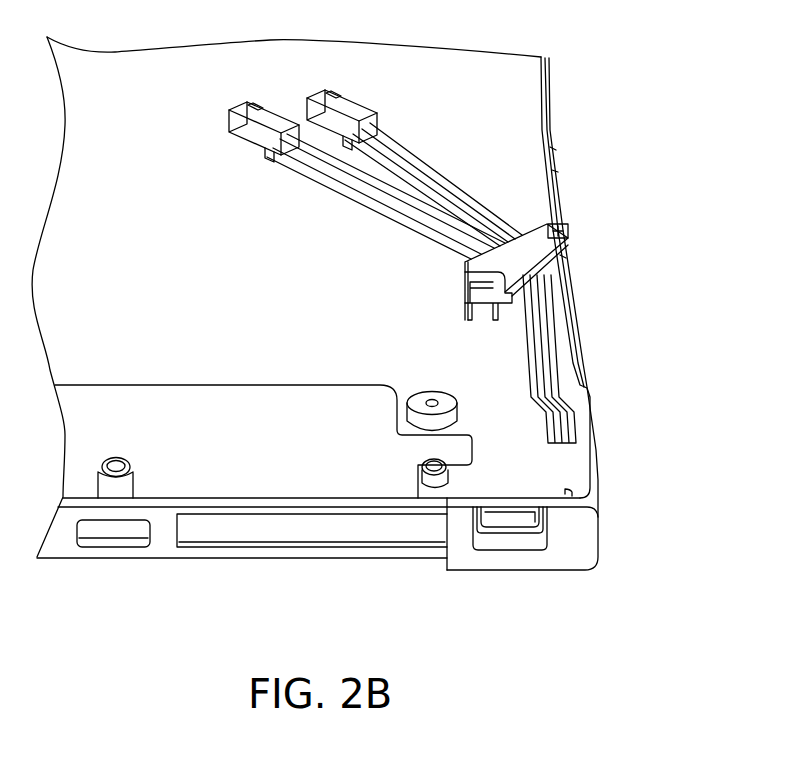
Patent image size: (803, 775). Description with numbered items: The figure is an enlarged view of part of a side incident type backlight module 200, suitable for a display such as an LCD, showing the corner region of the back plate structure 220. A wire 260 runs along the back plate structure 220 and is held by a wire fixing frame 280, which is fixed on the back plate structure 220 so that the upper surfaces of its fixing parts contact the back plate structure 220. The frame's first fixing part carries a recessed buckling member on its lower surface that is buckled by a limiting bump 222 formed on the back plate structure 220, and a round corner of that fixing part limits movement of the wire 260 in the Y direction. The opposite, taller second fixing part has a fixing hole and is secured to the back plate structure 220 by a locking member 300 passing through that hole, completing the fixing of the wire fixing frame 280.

The backlight module 200 is at (588, 618).
The back plate structure 220 is at (513, 473).
The limiting bump 222 is at (493, 288).
The wire 260 is at (403, 146).
The wire fixing frame 280 is at (532, 250).
The locking member 300 is at (560, 228).